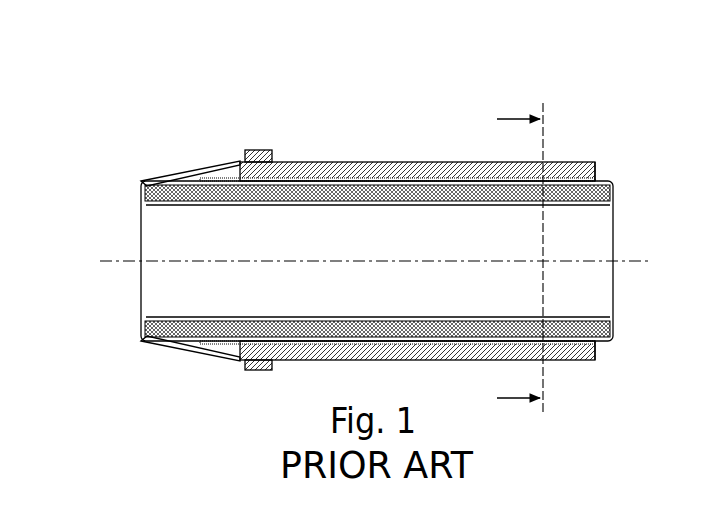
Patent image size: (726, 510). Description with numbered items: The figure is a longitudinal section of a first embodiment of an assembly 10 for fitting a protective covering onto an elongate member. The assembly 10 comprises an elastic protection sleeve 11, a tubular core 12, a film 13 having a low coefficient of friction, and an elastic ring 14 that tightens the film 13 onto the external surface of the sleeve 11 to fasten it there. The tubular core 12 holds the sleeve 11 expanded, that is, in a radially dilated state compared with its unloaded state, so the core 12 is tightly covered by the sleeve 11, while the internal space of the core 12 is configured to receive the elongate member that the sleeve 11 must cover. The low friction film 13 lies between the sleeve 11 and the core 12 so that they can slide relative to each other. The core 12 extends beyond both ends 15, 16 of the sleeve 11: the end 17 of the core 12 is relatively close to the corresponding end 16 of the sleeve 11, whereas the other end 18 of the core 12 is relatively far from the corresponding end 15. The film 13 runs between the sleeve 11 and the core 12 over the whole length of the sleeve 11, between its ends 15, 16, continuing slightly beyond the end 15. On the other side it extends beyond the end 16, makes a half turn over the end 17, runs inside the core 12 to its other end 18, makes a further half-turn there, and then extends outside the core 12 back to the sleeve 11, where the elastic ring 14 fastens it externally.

The assembly 10 is at (376, 248).
The elastic protection sleeve 11 is at (446, 168).
The tubular core 12 is at (347, 181).
The film with a low coefficient of friction 13 is at (394, 172).
The elastic ring 14 is at (259, 150).
The end of the sleeve 15 is at (236, 173).
The end of the sleeve 16 is at (600, 172).
The end of the core 17 is at (615, 190).
The end of the core 18 is at (141, 191).